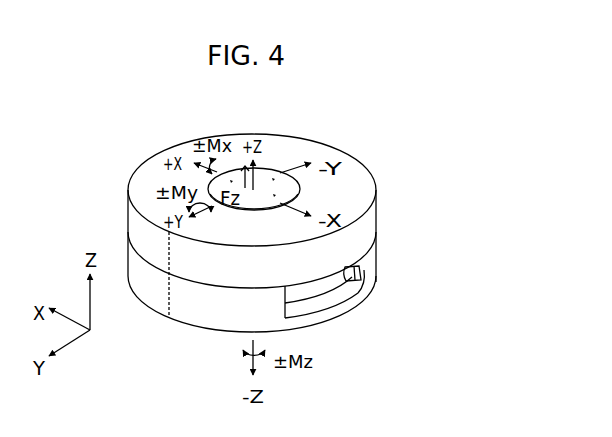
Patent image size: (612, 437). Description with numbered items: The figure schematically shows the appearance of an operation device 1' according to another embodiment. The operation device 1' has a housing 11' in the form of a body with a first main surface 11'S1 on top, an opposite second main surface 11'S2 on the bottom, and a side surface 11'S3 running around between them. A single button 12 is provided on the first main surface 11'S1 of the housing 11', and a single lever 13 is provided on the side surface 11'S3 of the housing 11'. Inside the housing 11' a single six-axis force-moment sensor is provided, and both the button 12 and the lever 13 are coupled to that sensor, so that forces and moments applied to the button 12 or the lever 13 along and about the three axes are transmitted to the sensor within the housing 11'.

The operation device 1' is at (291, 237).
The housing 11' is at (291, 252).
The first main surface 11'S1 is at (291, 190).
The second main surface 11'S2 is at (252, 330).
The side surface 11'S3 is at (291, 253).
The button 12 is at (268, 176).
The lever 13 is at (358, 277).